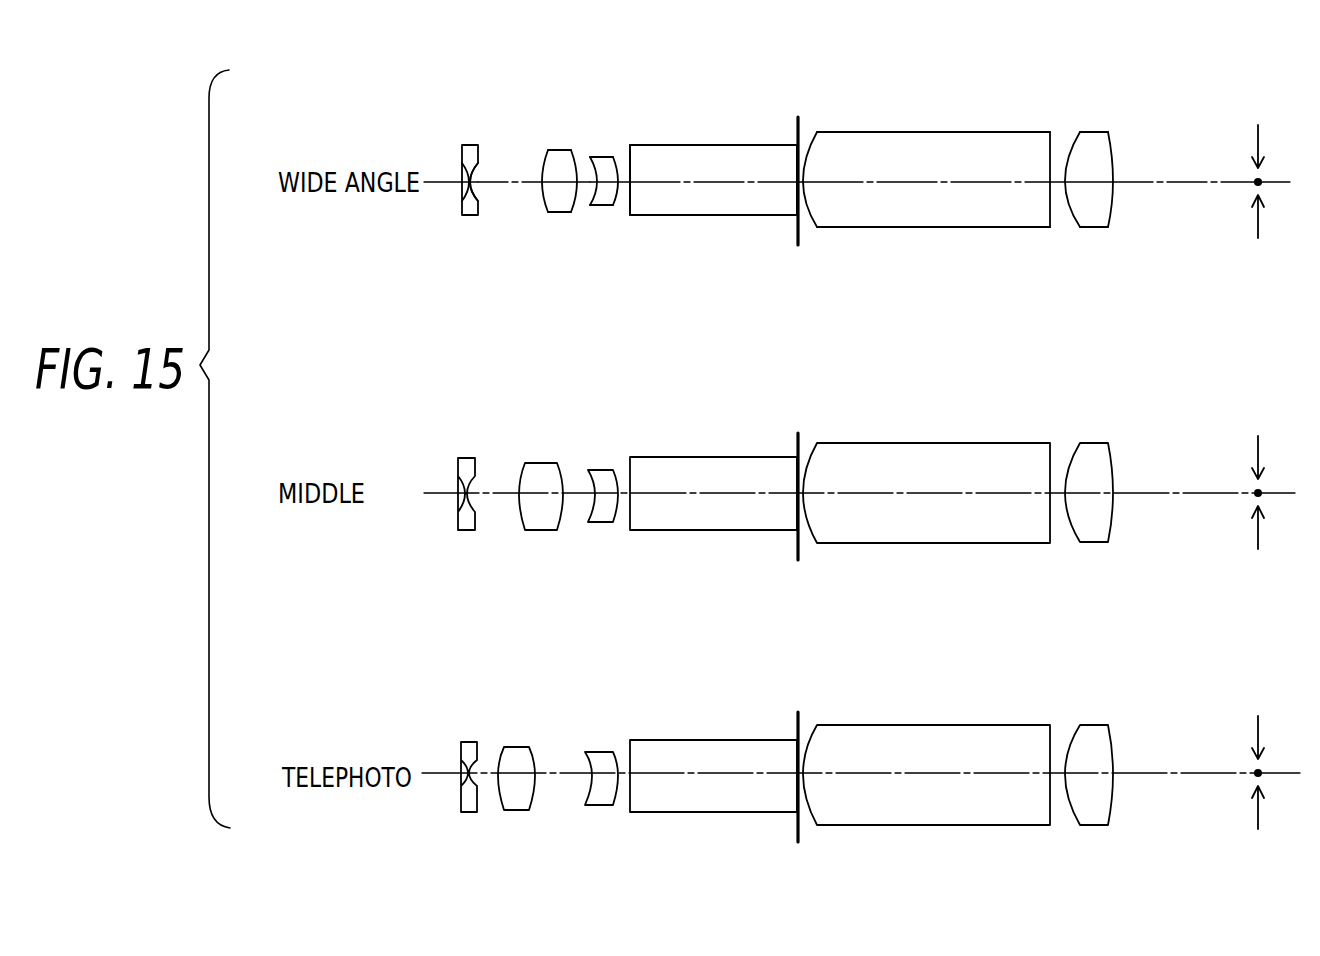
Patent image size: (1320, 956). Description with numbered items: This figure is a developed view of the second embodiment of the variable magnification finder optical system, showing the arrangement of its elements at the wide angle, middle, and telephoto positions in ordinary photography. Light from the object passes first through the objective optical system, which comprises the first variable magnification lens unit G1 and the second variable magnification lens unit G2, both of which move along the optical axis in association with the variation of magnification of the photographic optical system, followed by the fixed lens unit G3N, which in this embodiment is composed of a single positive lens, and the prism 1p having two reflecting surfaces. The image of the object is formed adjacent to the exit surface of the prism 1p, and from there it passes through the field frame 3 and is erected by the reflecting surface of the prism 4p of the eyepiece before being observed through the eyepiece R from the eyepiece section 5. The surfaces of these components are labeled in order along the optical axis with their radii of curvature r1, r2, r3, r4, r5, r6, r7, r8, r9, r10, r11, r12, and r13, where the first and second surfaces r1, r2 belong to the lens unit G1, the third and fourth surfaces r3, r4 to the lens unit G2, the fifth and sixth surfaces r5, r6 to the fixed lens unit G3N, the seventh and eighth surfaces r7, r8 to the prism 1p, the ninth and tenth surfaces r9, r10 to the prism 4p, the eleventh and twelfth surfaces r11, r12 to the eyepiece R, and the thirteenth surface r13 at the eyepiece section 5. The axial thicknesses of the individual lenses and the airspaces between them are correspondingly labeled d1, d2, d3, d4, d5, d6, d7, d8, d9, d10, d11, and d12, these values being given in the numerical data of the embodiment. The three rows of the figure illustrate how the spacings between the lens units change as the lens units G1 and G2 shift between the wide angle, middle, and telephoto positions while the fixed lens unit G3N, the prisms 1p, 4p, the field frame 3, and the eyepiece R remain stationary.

The first variable magnification lens unit G1 is at (459, 141).
The second variable magnification lens unit G2 is at (543, 142).
The fixed lens unit G3N is at (613, 136).
The prism 1p is at (713, 143).
The field frame 3 is at (797, 148).
The prism of the eyepiece 4p is at (926, 148).
The eyepiece R is at (1102, 146).
The eyepiece section 5 is at (1256, 143).
The radius of curvature of first lens surface r1 is at (462, 172).
The radius of curvature of second lens surface r2 is at (478, 172).
The radius of curvature of third lens surface r3 is at (543, 178).
The radius of curvature of fourth lens surface r4 is at (576, 168).
The radius of curvature of fifth lens surface r5 is at (592, 160).
The radius of curvature of sixth lens surface r6 is at (618, 158).
The radius of curvature of seventh lens surface r7 is at (630, 160).
The radius of curvature of eighth lens surface r8 is at (795, 150).
The radius of curvature of ninth lens surface r9 is at (805, 165).
The radius of curvature of tenth lens surface r10 is at (1050, 145).
The radius of curvature of eleventh lens surface r11 is at (1071, 160).
The radius of curvature of twelfth lens surface r12 is at (1112, 142).
The radius of curvature of thirteenth lens surface r13 is at (1259, 178).
The first lens thickness or airspace d1 is at (466, 195).
The second lens thickness or airspace d2 is at (512, 184).
The third lens thickness or airspace d3 is at (558, 190).
The fourth lens thickness or airspace d4 is at (585, 184).
The fifth lens thickness or airspace d5 is at (605, 184).
The sixth lens thickness or airspace d6 is at (625, 184).
The seventh lens thickness or airspace d7 is at (712, 184).
The eighth lens thickness or airspace d8 is at (808, 187).
The ninth lens thickness or airspace d9 is at (903, 184).
The tenth lens thickness or airspace d10 is at (1054, 184).
The eleventh lens thickness or airspace d11 is at (1093, 184).
The twelfth lens thickness or airspace d12 is at (1193, 182).